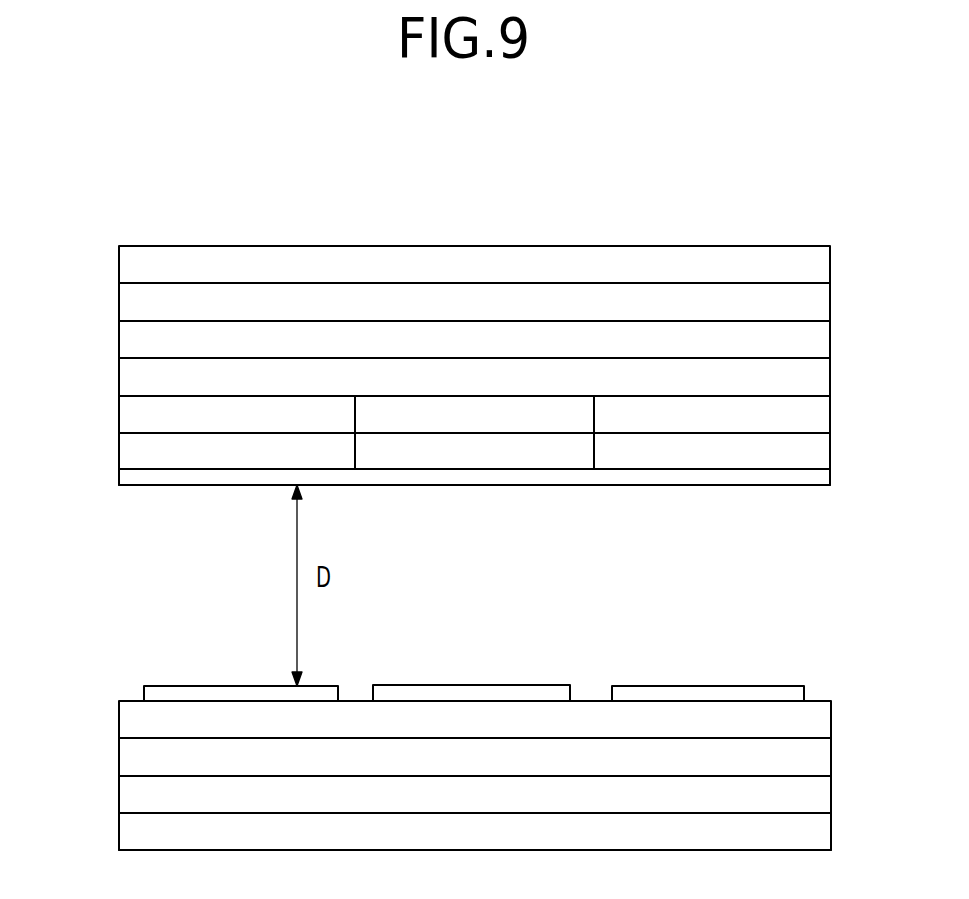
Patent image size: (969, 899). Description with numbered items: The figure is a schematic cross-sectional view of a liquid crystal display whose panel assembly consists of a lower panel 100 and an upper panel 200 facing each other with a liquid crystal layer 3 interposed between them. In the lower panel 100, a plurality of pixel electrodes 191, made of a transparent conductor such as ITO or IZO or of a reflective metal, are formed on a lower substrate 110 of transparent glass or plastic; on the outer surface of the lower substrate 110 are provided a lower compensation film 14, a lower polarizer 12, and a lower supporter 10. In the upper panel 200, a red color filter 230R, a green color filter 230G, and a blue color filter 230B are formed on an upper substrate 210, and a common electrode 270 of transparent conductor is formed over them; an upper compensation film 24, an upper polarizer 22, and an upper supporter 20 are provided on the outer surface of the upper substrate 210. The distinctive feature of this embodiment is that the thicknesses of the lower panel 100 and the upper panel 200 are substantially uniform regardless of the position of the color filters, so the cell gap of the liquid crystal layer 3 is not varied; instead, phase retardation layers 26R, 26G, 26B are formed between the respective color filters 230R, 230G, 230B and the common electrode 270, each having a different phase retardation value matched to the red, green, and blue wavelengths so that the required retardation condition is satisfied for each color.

The upper supporter 20 is at (143, 266).
The upper polarizer 22 is at (143, 304).
The upper compensation film 24 is at (143, 341).
The upper substrate 210 is at (143, 378).
The red color filter 230R is at (178, 413).
The red phase retardation layer 26R is at (253, 452).
The green color filter 230G is at (430, 413).
The green phase retardation layer 26G is at (503, 452).
The blue color filter 230B is at (665, 413).
The blue phase retardation layer 26B is at (738, 453).
The common electrode 270 is at (143, 479).
The upper panel 200 is at (841, 358).
The liquid crystal layer 3 is at (841, 488).
The pixel electrode 191 is at (177, 693).
The lower substrate 110 is at (143, 720).
The lower panel 100 is at (841, 686).
The lower compensation film 14 is at (143, 758).
The lower polarizer 12 is at (143, 796).
The lower supporter 10 is at (143, 833).